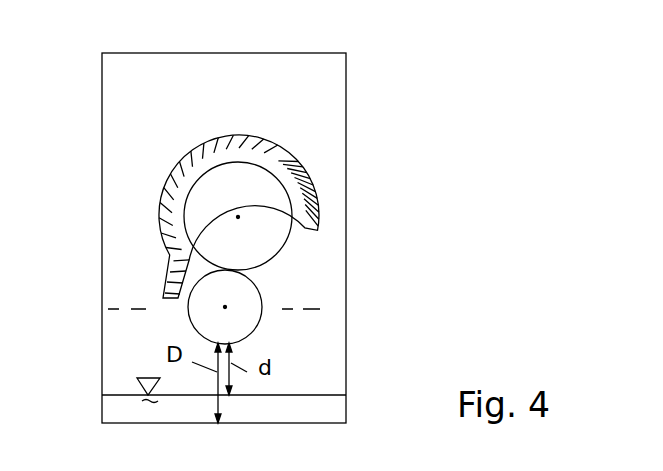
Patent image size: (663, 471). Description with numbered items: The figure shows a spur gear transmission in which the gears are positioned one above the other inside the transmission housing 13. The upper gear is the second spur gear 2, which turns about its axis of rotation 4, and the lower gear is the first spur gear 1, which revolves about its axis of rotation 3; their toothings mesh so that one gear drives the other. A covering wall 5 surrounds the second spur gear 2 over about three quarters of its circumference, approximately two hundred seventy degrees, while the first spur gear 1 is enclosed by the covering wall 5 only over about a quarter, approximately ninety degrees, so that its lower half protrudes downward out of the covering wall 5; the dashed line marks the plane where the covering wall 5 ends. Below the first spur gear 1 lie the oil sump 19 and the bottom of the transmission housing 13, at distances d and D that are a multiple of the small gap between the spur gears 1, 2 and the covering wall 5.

The first spur gear 1 is at (270, 308).
The second spur gear 2 is at (283, 233).
The axis of rotation 3 is at (225, 307).
The axis of rotation 4 is at (238, 217).
The covering wall 5 is at (307, 175).
The transmission housing 13 is at (346, 83).
The oil sump 19 is at (338, 410).